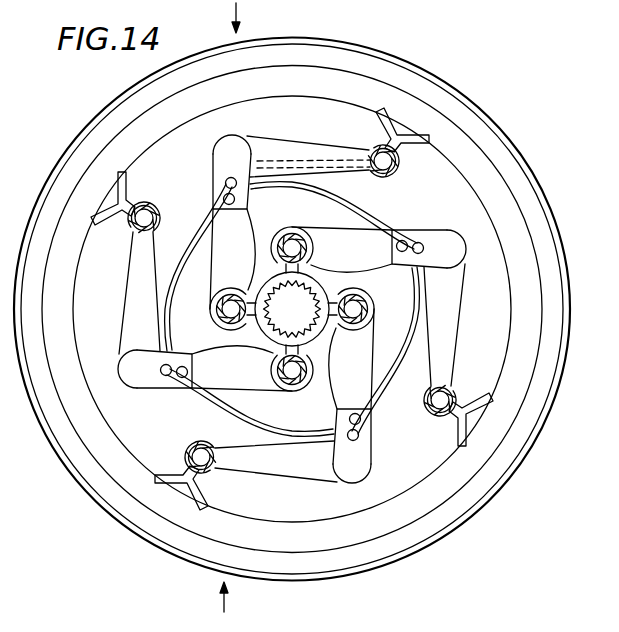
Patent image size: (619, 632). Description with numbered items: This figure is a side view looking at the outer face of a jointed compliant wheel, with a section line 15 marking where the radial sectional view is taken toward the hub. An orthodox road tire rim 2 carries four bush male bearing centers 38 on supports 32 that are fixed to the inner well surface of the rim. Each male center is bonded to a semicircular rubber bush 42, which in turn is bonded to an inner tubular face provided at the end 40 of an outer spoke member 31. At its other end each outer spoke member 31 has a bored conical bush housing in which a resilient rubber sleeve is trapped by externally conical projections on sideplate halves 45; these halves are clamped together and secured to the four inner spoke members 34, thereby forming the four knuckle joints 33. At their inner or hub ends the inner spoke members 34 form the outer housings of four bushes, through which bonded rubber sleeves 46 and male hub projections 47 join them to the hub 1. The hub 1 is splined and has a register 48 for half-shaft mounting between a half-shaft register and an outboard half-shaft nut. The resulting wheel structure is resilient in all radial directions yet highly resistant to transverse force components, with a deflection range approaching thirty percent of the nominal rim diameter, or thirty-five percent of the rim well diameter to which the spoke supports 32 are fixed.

The hub 1 is at (338, 288).
The road tire rim 2 is at (88, 147).
The section line 15— 15 is at (218, 308).
The outer spoke member 31 is at (290, 153).
The support 32 is at (390, 126).
The knuckle joint 33 is at (238, 146).
The inner spoke member 34 is at (322, 233).
The bush male bearing center 38 is at (146, 200).
The end of outer spoke member 40 is at (160, 215).
The semicircular rubber bush 42 is at (140, 233).
The sideplate half 45 is at (228, 156).
The bonded rubber sleeve 46 is at (373, 313).
The male hub projection 47 is at (293, 235).
The register 48 is at (329, 356).